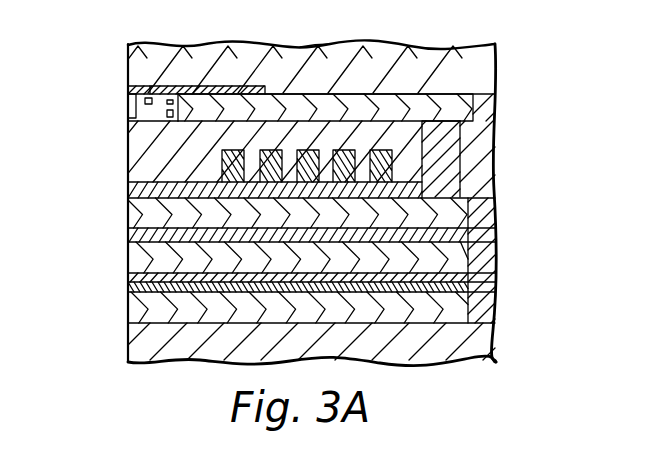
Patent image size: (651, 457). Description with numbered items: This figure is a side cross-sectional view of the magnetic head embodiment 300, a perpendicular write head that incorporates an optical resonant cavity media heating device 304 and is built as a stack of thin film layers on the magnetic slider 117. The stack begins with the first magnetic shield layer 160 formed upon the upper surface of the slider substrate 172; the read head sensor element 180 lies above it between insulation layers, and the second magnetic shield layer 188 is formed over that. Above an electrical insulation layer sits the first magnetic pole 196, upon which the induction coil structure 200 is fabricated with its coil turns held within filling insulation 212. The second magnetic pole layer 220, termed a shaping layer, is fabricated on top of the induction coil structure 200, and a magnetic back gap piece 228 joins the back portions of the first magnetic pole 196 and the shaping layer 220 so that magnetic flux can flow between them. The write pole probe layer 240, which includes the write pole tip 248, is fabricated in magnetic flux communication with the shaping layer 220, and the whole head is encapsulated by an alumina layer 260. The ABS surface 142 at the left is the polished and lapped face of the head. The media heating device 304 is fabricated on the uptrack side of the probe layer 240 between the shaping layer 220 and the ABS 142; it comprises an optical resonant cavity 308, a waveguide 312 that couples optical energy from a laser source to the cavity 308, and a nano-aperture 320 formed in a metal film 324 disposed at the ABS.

The magnetic head embodiment 300 is at (123, 44).
The optical resonant cavity 308 is at (162, 92).
The waveguide 312 is at (182, 114).
The write pole probe layer 240 is at (308, 40).
The alumina layer 260 is at (391, 53).
The write pole tip 248 is at (131, 90).
The nano-aperture 320 is at (130, 103).
The metal film 324 is at (130, 112).
The optical resonant cavity media heating device 304 is at (130, 143).
The filling insulation 212 is at (182, 159).
The second magnetic pole layer 220 is at (462, 103).
The induction coil structure 200 is at (410, 162).
The magnetic back gap piece 228 is at (447, 178).
The first magnetic pole 196 is at (457, 215).
The ABS surface 142 is at (128, 215).
The second magnetic shield layer 188 is at (452, 261).
The read head sensor element 180 is at (128, 281).
The first magnetic shield layer 160 is at (450, 309).
The slider substrate 172 is at (462, 352).
The magnetic slider 117 is at (217, 350).